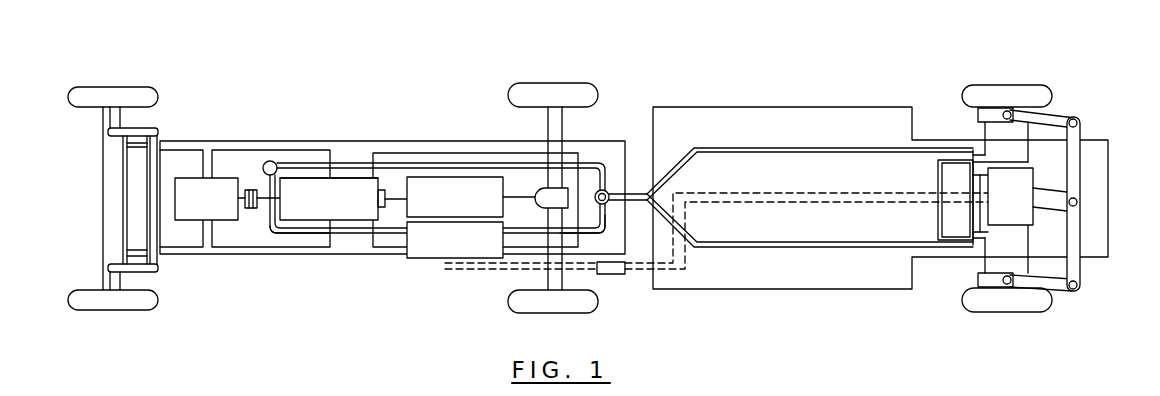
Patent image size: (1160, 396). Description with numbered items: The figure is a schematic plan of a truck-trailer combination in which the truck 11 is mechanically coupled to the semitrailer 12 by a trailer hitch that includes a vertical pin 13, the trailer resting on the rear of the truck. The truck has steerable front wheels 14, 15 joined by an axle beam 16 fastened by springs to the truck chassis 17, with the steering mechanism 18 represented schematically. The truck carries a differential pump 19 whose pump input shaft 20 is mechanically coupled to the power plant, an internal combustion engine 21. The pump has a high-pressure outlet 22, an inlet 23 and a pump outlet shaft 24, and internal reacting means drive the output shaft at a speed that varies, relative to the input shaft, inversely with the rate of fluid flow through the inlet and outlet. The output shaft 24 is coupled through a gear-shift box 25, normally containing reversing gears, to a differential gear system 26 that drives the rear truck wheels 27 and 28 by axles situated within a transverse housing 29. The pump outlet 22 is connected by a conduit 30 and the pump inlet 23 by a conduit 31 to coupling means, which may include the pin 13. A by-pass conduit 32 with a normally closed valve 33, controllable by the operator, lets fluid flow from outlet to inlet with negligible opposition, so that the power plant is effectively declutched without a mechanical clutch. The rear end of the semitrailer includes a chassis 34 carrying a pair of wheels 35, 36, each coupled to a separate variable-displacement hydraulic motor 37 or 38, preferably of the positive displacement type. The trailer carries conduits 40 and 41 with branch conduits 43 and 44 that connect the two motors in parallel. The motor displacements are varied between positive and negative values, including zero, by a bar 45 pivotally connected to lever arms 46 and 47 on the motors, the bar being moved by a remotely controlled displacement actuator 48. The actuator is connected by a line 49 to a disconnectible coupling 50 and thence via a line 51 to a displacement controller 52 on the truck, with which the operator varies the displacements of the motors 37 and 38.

The truck 11 is at (290, 123).
The semitrailer 12 is at (794, 73).
The vertical pin 13 is at (610, 192).
The steerable front wheel 14 is at (130, 90).
The steerable front wheel 15 is at (130, 308).
The axle beam 16 is at (103, 232).
The truck chassis 17 is at (198, 142).
The steering mechanism 18 is at (160, 137).
The differential pump 19 is at (352, 220).
The pump input shaft 20 is at (260, 208).
The internal combustion engine 21 is at (197, 219).
The high-pressure outlet 22 is at (372, 178).
The inlet 23 is at (376, 220).
The pump outlet shaft 24 is at (397, 197).
The gear-shift box 25 is at (483, 178).
The differential gear system 26 is at (542, 205).
The rear truck wheel 27 is at (560, 90).
The rear truck wheel 28 is at (560, 308).
The transverse housing 29 is at (562, 130).
The conduit 30 is at (433, 165).
The conduit 31 is at (605, 234).
The by-pass conduit 32 is at (285, 233).
The normally closed valve 33 is at (263, 167).
The chassis 34 is at (849, 289).
The wheel 35 is at (1025, 88).
The wheel 36 is at (1012, 308).
The variable-displacement hydraulic motor 37 is at (978, 118).
The variable-displacement hydraulic motor 38 is at (980, 278).
The conduit 40 is at (738, 150).
The conduit 41 is at (733, 247).
The branch conduit 43 is at (938, 215).
The branch conduit 44 is at (988, 230).
The bar 45 is at (1075, 175).
The lever arm 46 is at (1060, 118).
The lever arm 47 is at (1060, 287).
The displacement actuator 48 is at (1030, 178).
The line 49 is at (750, 200).
The disconnectible coupling 50 is at (612, 275).
The line 51 is at (490, 268).
The displacement controller 52 is at (438, 260).